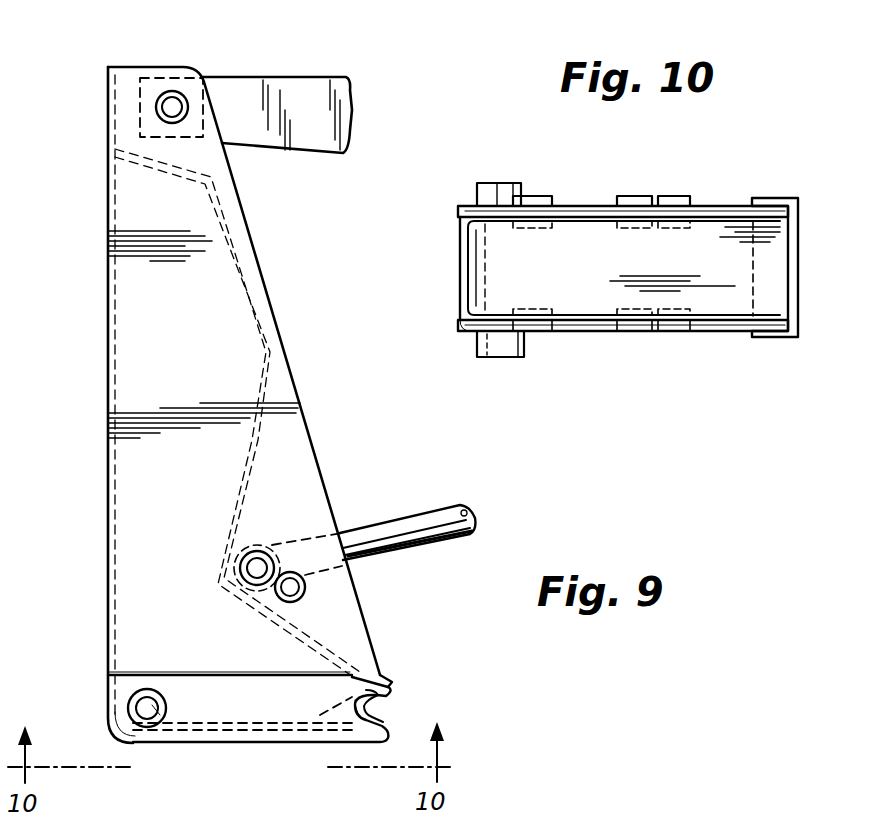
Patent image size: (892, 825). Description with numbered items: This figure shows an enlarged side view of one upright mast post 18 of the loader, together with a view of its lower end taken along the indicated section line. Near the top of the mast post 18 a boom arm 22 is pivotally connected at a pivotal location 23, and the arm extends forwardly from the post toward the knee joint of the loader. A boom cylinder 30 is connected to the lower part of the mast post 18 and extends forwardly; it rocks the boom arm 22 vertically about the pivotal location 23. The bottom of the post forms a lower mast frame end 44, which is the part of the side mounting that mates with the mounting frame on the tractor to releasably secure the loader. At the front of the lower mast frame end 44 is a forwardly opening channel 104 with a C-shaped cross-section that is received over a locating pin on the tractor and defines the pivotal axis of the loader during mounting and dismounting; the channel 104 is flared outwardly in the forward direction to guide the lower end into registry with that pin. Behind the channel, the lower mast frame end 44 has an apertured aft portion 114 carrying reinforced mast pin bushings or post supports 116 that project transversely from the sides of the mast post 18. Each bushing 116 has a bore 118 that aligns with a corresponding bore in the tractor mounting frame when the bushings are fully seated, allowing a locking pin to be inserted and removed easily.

In FIG. 9, the mast post 18 is at (168, 365).
In FIG. 9, the boom arm 22 is at (310, 85).
In FIG. 9, the pivotal location 23 is at (168, 100).
In FIG. 9, the boom cylinder 30 is at (400, 523).
In FIG. 9, the lower mast frame end 44 is at (405, 657).
In FIG. 10, the lower mast frame end 44 is at (432, 225).
In FIG. 9, the forwardly opening channel 104 is at (384, 713).
In FIG. 10, the forwardly opening channel 104 is at (782, 162).
In FIG. 9, the apertured aft portion 114 is at (140, 740).
In FIG. 10, the apertured aft portion 114 is at (460, 337).
In FIG. 9, the mast pin bushing 116 is at (148, 688).
In FIG. 10, the mast pin bushing 116 is at (523, 195).
In FIG. 9, the bore 118 is at (163, 713).
In FIG. 10, the bore 118 is at (481, 197).